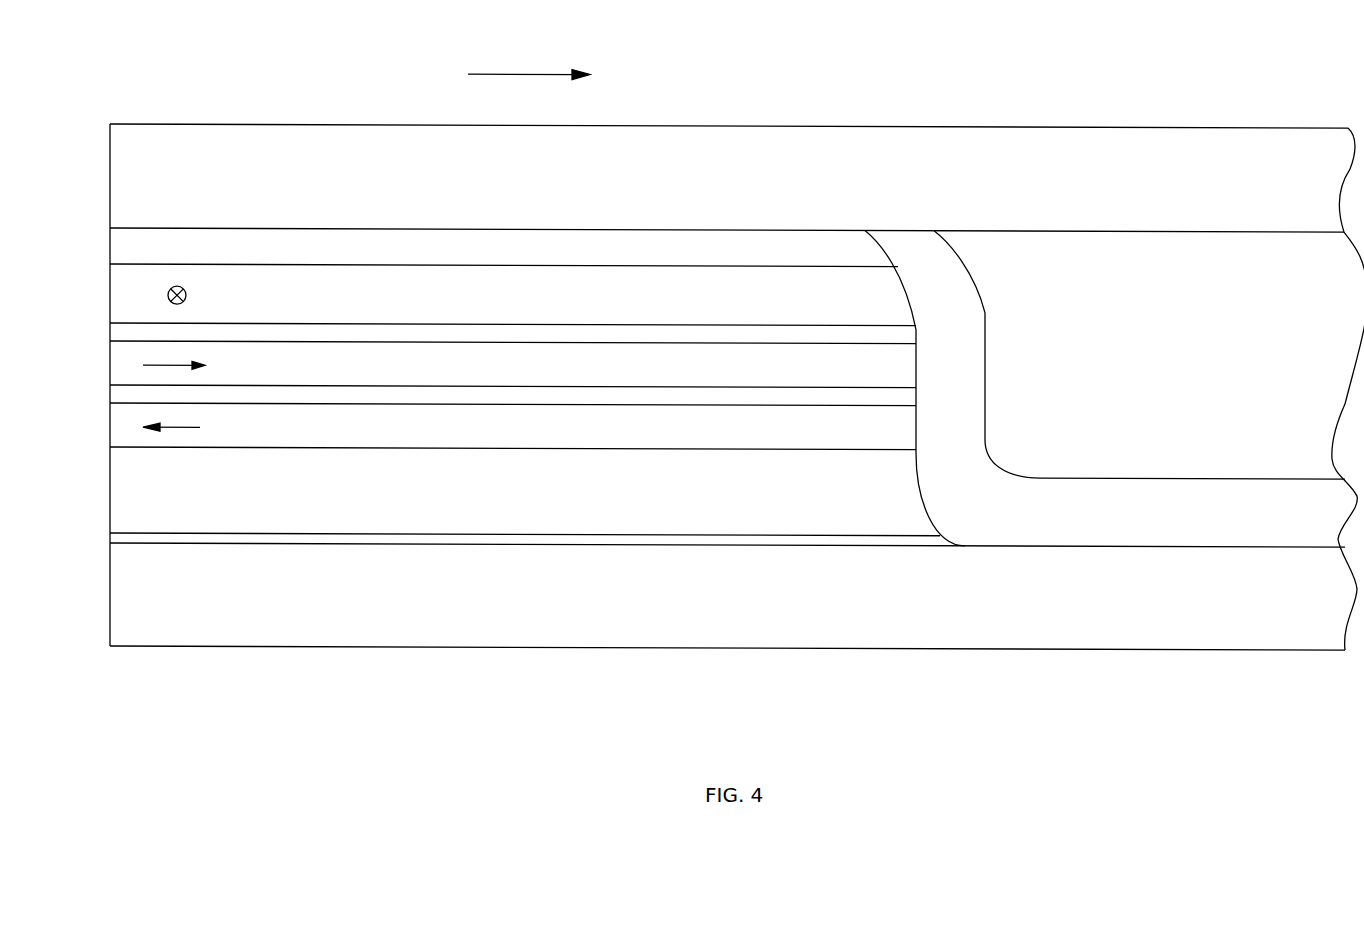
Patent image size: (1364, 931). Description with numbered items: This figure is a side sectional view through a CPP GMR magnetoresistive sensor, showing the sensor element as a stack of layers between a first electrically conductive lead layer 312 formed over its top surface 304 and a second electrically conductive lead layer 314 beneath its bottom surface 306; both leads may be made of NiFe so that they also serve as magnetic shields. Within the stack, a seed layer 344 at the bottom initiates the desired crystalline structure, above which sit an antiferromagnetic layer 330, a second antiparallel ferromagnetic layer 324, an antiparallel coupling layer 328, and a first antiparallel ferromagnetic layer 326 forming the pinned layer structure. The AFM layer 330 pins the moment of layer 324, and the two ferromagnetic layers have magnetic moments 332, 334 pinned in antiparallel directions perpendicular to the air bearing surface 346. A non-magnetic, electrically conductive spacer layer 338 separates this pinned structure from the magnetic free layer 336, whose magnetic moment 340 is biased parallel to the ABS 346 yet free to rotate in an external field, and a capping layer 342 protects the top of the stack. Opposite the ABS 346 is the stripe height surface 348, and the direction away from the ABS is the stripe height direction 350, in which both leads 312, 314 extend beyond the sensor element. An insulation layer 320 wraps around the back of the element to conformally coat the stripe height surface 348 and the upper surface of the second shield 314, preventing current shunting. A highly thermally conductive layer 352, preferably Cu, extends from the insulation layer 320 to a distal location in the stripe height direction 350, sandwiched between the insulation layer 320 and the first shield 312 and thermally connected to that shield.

The top surface 304 is at (178, 228).
The bottom surface 306 is at (540, 543).
The first electrically conductive lead layer 312 is at (620, 178).
The second electrically conductive lead layer 314 is at (677, 603).
The insulation layer 320 is at (1050, 500).
The second antiparallel ferromagnetic layer 324 is at (452, 423).
The first antiparallel ferromagnetic layer 326 is at (452, 360).
The antiparallel coupling layer 328 is at (710, 397).
The antiferromagnetic layer 330 is at (447, 490).
The magnetic moment 332 is at (188, 427).
The magnetic moment 334 is at (167, 363).
The magnetic free layer 336 is at (452, 297).
The spacer layer 338 is at (688, 330).
The magnetic moment 340 is at (188, 293).
The capping layer 342 is at (457, 248).
The seed layer 344 is at (803, 540).
The air bearing surface 346 is at (110, 341).
The stripe height surface 348 is at (916, 360).
The stripe height direction 350 is at (500, 73).
The thermally conductive layer 352 is at (1140, 327).